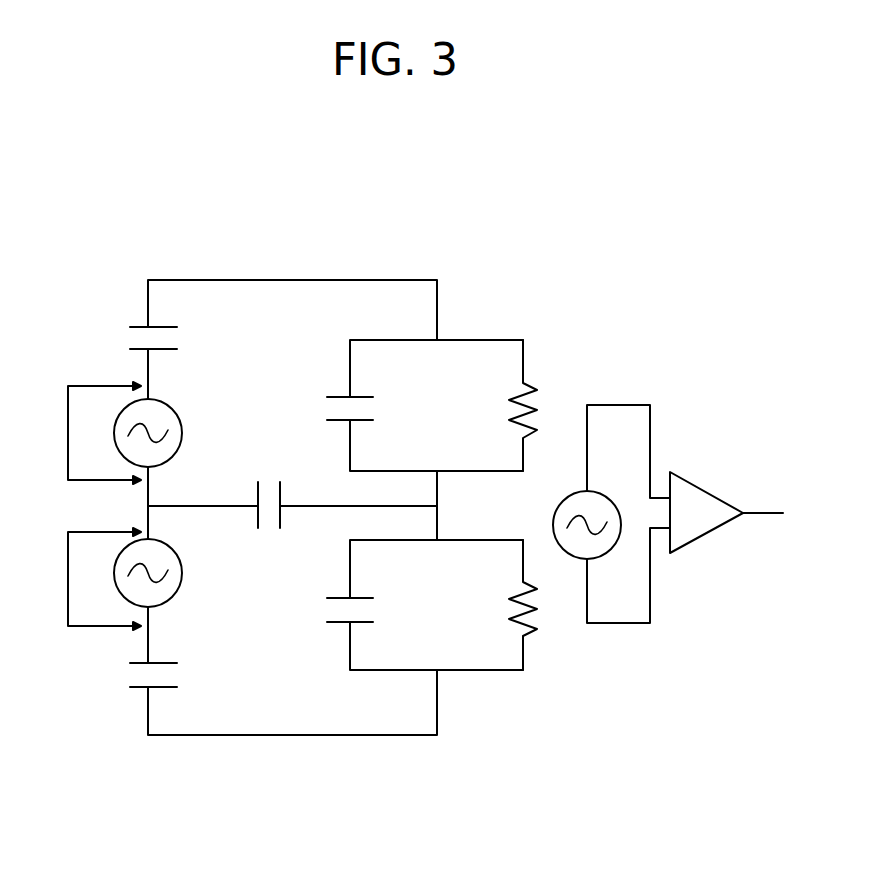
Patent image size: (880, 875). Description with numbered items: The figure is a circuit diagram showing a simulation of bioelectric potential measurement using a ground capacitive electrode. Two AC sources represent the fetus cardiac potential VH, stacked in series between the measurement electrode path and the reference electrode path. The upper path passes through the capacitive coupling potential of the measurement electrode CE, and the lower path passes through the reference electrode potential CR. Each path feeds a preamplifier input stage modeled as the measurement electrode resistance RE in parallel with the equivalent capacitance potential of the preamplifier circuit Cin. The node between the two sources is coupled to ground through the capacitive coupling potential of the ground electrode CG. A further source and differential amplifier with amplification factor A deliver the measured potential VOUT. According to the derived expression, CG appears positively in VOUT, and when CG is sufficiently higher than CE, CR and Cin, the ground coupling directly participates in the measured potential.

The capacitive coupling potential of the measurement electrode CE is at (133, 338).
The fetus cardiac potential VH is at (104, 506).
The reference electrode potential CR is at (133, 680).
The capacitive coupling potential of the ground electrode CG is at (271, 523).
The equivalent capacitance potential of the preamplifier circuit Cin is at (333, 514).
The measurement electrode resistance RE is at (504, 505).
The measured potential VOUT is at (668, 514).